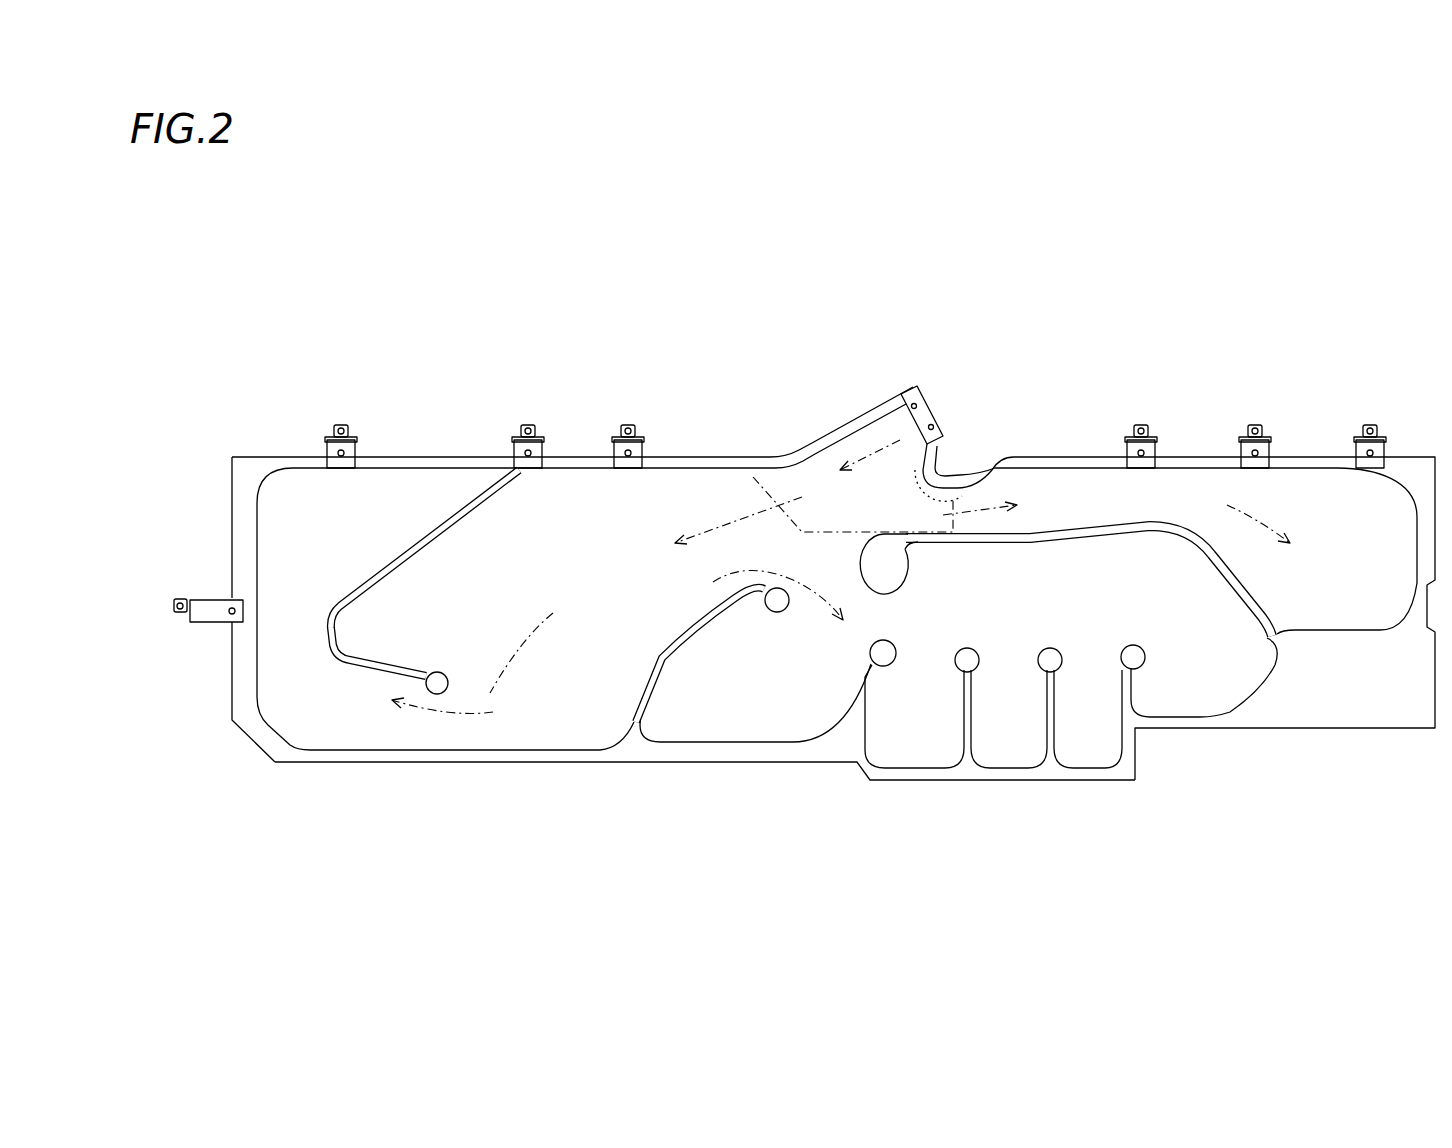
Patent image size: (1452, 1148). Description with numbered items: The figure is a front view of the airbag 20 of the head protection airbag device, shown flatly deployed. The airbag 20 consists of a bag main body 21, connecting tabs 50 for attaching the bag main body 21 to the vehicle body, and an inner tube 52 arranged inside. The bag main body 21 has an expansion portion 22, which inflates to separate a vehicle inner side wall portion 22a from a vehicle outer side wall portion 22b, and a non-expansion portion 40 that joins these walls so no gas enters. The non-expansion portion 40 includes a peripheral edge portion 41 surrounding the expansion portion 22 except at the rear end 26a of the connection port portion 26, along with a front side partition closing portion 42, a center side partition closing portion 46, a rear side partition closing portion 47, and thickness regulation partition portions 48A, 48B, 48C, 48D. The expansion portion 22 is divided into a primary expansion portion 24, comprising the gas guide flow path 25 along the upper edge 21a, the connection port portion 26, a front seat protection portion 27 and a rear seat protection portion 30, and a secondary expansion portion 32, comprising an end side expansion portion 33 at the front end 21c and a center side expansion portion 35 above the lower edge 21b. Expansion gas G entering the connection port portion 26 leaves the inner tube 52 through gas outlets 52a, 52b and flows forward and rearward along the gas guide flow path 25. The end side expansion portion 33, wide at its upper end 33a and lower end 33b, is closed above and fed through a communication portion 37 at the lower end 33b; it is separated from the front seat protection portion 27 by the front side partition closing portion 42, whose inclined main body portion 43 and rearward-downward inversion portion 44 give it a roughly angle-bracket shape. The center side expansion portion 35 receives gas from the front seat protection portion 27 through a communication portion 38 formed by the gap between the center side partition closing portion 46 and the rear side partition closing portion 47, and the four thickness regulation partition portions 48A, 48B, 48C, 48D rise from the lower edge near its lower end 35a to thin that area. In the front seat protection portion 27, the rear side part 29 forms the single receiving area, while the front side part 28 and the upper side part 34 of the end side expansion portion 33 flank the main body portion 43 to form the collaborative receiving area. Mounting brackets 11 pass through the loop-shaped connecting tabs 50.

The mounting bracket 11 is at (341, 425).
The airbag 20 is at (800, 535).
The bag main body 21 is at (798, 614).
The upper edge 21a is at (682, 463).
The lower wall of housing 21b is at (680, 755).
The front end 21c is at (237, 668).
The expansion portion 22 is at (799, 612).
The vehicle inner side wall portion 22a is at (287, 688).
The vehicle outer side wall portion 22b is at (297, 690).
The primary expansion portion 24 is at (855, 603).
The gas guide flow path 25 is at (1053, 470).
The connection port portion 26 is at (897, 366).
The rear end 26a is at (920, 407).
The front seat protection portion 27 is at (537, 700).
The front side part 28 is at (577, 558).
The rear side part 29 is at (425, 562).
The rear seat protection portion 30 is at (1313, 617).
The secondary expansion portion 32 is at (665, 617).
The end side expansion portion 33 is at (275, 510).
The upper end 33a is at (362, 490).
The lower end 33b is at (353, 740).
The upper side part 34 is at (442, 490).
The center side expansion portion 35 is at (797, 695).
The lower end 35a is at (1100, 752).
The communication portion 37 is at (437, 728).
The communication portion 38 is at (845, 582).
The non-expansion portion 40 is at (780, 609).
The peripheral edge portion 41 is at (558, 457).
The front side partition closing portion 42 is at (355, 580).
The main body portion 43 is at (447, 530).
The inversion portion 44 is at (393, 655).
The center side partition closing portion 46 is at (693, 640).
The rear side partition closing portion 47 is at (1058, 581).
The thickness regulation partition portion 48A is at (870, 713).
The thickness regulation partition portion 48B is at (963, 720).
The thickness regulation partition portion 48C is at (1047, 718).
The thickness regulation partition portion 48D is at (1132, 693).
The connecting tab 50 is at (805, 457).
The inner tube 52 is at (818, 434).
The gas outlet 52a is at (757, 487).
The gas outlet 52b is at (953, 520).
The expansion gas G is at (694, 581).